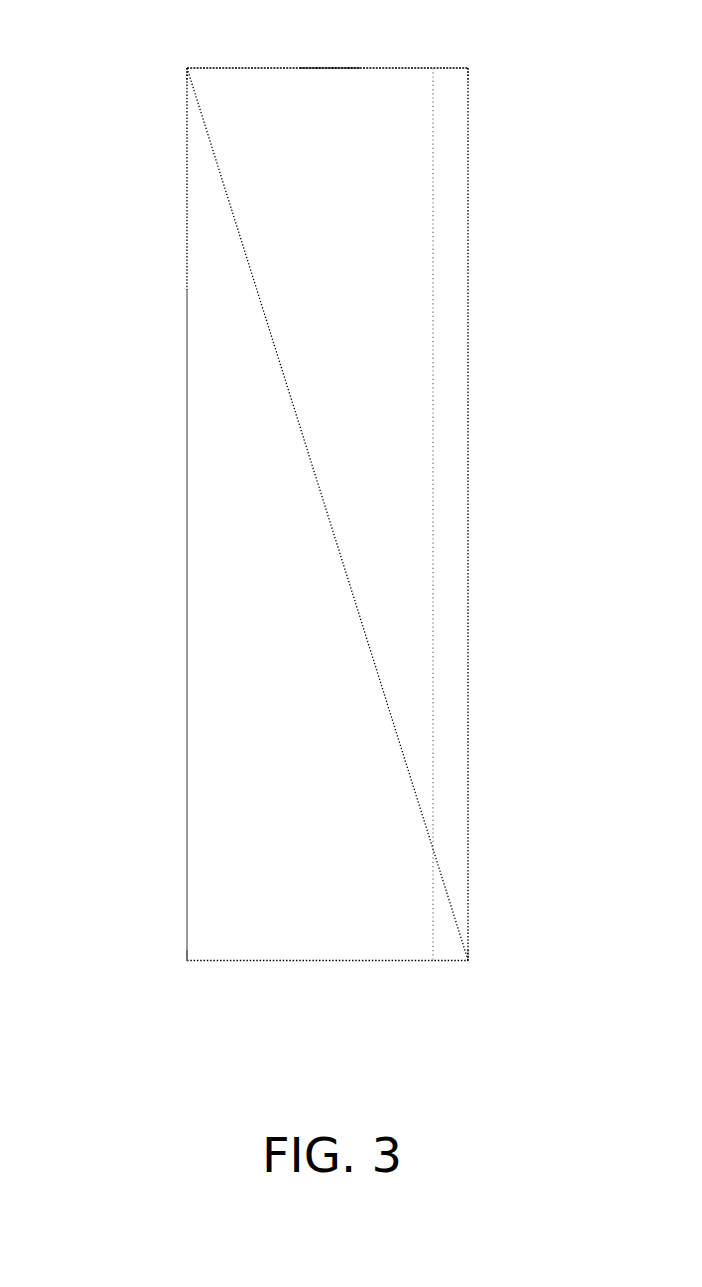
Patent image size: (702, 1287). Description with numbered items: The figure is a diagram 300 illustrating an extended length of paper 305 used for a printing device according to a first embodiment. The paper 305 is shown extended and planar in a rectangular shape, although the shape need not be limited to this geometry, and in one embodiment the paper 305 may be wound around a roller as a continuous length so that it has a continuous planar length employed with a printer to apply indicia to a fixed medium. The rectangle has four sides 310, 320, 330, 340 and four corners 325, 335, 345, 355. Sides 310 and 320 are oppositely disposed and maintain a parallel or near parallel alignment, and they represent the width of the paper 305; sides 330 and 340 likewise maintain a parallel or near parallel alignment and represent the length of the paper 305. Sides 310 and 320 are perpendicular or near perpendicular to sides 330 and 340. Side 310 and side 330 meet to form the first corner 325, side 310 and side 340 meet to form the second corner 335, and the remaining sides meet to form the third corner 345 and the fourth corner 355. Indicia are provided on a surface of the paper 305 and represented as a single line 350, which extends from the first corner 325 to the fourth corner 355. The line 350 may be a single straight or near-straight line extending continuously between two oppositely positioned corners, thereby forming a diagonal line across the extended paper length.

The diagram 300 is at (279, 565).
The extended length of paper 305 is at (257, 68).
The side 310 is at (328, 68).
The side 320 is at (257, 961).
The first corner 325 is at (187, 68).
The side 330 is at (187, 290).
The second corner 335 is at (468, 68).
The side 340 is at (468, 292).
The third corner 345 is at (187, 961).
The single line 350 is at (283, 380).
The fourth corner 355 is at (468, 961).